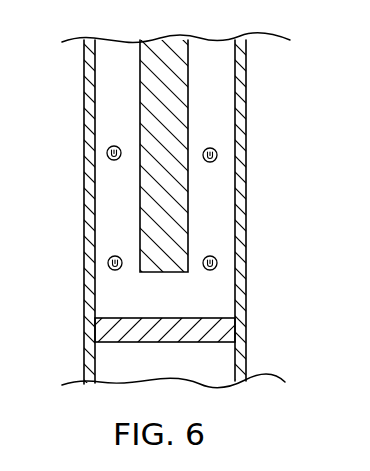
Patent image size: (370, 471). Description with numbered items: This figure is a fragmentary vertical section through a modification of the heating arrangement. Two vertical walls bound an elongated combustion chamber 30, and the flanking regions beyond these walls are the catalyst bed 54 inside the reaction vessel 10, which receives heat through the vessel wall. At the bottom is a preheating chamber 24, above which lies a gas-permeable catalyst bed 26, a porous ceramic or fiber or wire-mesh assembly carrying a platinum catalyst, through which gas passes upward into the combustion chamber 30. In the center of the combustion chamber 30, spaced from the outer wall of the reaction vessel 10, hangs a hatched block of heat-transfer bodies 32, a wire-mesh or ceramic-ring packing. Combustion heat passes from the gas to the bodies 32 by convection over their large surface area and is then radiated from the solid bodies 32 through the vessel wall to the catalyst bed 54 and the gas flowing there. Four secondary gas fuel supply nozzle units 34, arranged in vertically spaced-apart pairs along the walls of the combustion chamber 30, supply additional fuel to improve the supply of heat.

The reaction vessel 10 is at (247, 52).
The preheating chamber 24 is at (165, 362).
The gas-permeable catalyst bed 26 is at (223, 330).
The combustion chamber 30 is at (165, 295).
The heat-transfer bodies 32 is at (175, 105).
The secondary gas fuel supply nozzle units 34 is at (107, 153).
The catalyst bed 54 is at (170, 215).